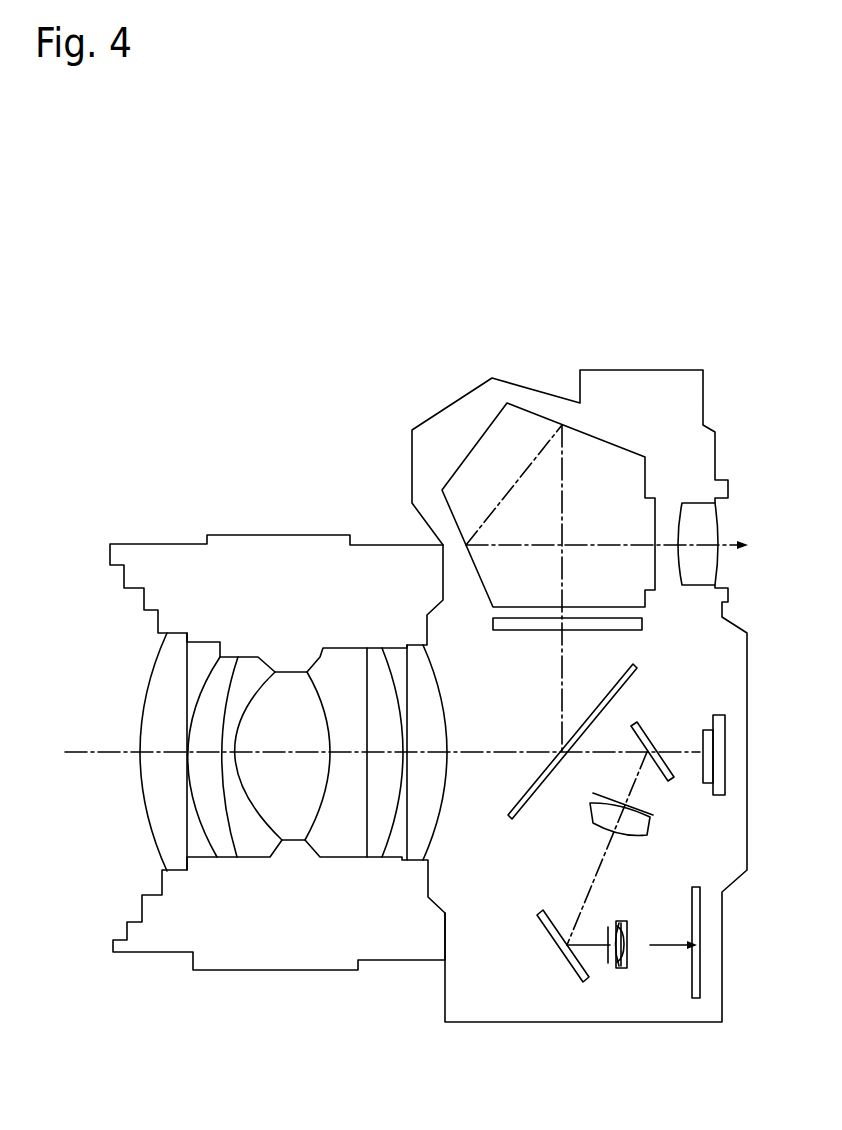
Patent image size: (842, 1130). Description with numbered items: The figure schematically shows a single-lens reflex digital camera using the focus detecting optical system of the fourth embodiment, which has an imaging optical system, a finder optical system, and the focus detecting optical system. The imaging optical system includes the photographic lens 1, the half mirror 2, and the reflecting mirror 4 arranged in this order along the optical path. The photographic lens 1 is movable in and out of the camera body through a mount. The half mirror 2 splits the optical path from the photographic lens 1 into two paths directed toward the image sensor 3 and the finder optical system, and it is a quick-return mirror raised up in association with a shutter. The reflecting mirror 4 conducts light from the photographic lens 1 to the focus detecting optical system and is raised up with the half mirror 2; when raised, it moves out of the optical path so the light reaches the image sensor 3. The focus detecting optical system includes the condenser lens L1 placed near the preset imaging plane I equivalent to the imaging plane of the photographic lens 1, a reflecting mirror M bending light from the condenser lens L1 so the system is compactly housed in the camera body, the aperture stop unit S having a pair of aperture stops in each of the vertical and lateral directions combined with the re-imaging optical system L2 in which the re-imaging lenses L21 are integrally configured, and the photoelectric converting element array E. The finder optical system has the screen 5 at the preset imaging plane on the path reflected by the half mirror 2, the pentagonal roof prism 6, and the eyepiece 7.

The photographic lens 1 is at (423, 877).
The half mirror 2 is at (628, 677).
The image sensor 3 is at (718, 732).
The reflecting mirror 4 is at (660, 777).
The screen 5 is at (628, 627).
The pentagonal roof prism 6 is at (588, 453).
The eyepiece 7 is at (697, 520).
The preset imaging plane I is at (653, 818).
The condenser lens L1 is at (647, 837).
The photoelectric converting element array E is at (700, 922).
The reflecting mirror M is at (562, 952).
The aperture stop unit S is at (608, 960).
The re-imaging optical system L2 is at (620, 967).
The re-imaging lens L21 is at (617, 927).